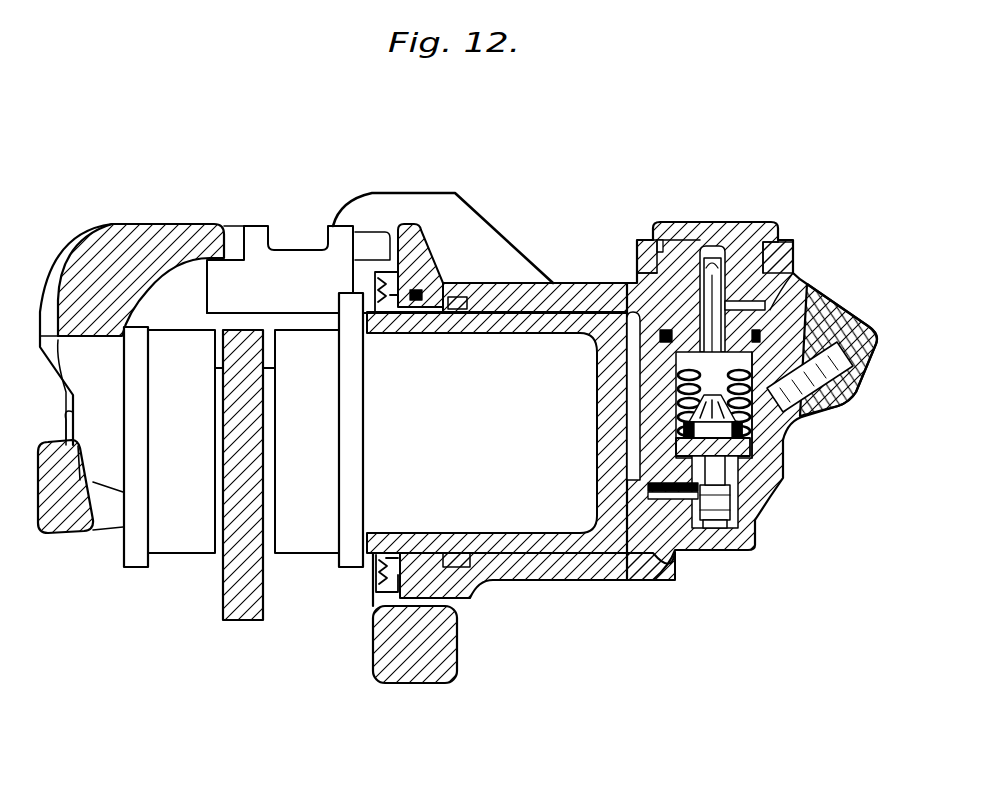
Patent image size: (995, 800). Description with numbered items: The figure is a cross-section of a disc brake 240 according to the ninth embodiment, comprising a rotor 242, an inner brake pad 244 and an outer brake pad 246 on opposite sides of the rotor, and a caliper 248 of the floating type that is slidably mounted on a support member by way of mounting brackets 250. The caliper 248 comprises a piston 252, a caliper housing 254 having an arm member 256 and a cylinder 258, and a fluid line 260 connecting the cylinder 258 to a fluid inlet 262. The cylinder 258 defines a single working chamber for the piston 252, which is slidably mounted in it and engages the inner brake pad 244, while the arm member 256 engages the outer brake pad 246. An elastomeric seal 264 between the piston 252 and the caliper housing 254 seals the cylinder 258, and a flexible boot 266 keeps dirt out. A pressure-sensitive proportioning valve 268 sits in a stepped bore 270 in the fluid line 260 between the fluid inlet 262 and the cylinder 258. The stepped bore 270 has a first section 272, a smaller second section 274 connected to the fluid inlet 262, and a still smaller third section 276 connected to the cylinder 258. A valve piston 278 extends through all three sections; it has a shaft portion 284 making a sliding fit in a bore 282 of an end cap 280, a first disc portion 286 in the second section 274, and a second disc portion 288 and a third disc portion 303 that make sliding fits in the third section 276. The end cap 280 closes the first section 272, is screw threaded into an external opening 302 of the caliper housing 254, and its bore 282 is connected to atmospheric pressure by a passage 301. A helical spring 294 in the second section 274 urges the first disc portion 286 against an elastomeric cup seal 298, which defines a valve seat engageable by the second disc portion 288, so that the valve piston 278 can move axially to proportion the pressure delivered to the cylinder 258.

The disc brake 240 is at (495, 211).
The rotor 242 is at (238, 603).
The inner brake pad 244 is at (317, 545).
The outer brake pad 246 is at (187, 542).
The caliper 248 is at (566, 296).
The mounting bracket 250 is at (447, 653).
The piston 252 is at (530, 547).
The caliper housing 254 is at (753, 540).
The arm member 256 is at (118, 246).
The cylinder 258 is at (640, 365).
The fluid line 260 is at (673, 547).
The fluid inlet 262 is at (827, 297).
The elastomeric seal 264 is at (457, 553).
The flexible boot 266 is at (383, 557).
The proportioning valve 268 is at (760, 418).
The stepped bore 270 is at (768, 445).
The first section 272 is at (794, 268).
The second section 274 is at (705, 402).
The third section 276 is at (757, 495).
The valve piston 278 is at (672, 490).
The end cap 280 is at (748, 242).
The bore 282 is at (712, 287).
The shaft portion 284 is at (690, 285).
The first disc portion 286 is at (707, 430).
The second disc portion 288 is at (737, 487).
The helical spring 294 is at (677, 378).
The elastomeric cup seal 298 is at (690, 455).
The passage 301 is at (767, 307).
The external opening 302 is at (783, 238).
The third disc portion 303 is at (753, 518).